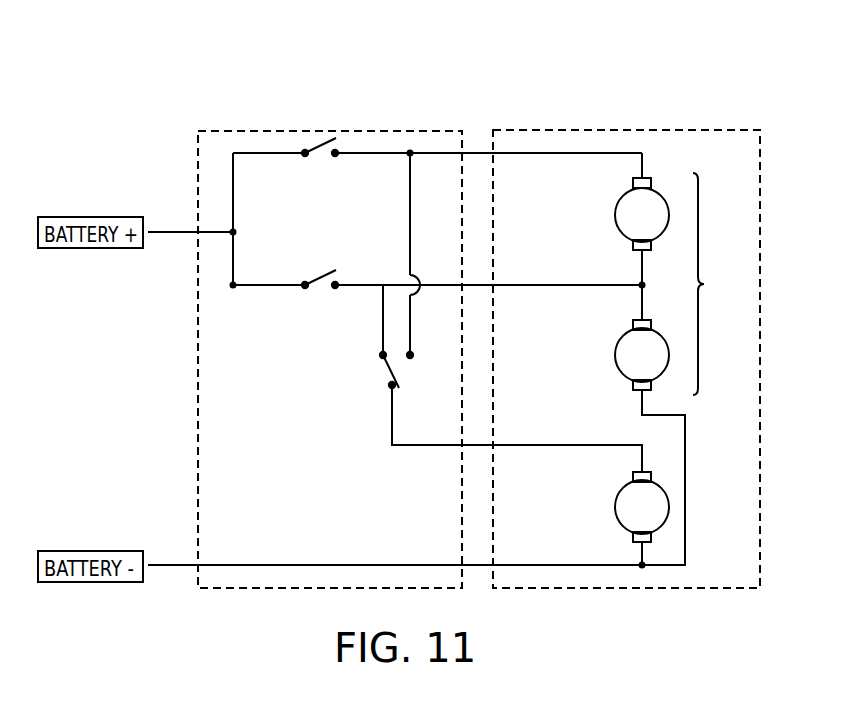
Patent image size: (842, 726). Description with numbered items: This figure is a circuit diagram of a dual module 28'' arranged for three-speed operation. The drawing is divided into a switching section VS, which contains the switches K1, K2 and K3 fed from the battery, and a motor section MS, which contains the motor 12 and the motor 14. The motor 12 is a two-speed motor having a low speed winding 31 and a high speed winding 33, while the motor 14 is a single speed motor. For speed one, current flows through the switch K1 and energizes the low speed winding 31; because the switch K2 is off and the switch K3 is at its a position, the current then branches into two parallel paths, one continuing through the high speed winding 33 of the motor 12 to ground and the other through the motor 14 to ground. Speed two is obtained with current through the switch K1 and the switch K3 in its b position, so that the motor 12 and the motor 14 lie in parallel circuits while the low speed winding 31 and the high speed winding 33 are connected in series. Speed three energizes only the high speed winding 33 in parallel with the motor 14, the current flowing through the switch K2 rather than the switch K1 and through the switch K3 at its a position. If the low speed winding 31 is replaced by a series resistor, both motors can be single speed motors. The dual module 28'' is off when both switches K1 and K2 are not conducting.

The dual module 28'' is at (551, 68).
The low speed winding 31 is at (615, 215).
The high speed winding 33 is at (615, 355).
The motor 14 is at (615, 507).
The motor 12 is at (714, 284).
The switching section VS is at (240, 130).
The motor section MS is at (627, 130).
The switch K1 is at (318, 143).
The switch K2 is at (318, 275).
The switch K3 is at (388, 374).